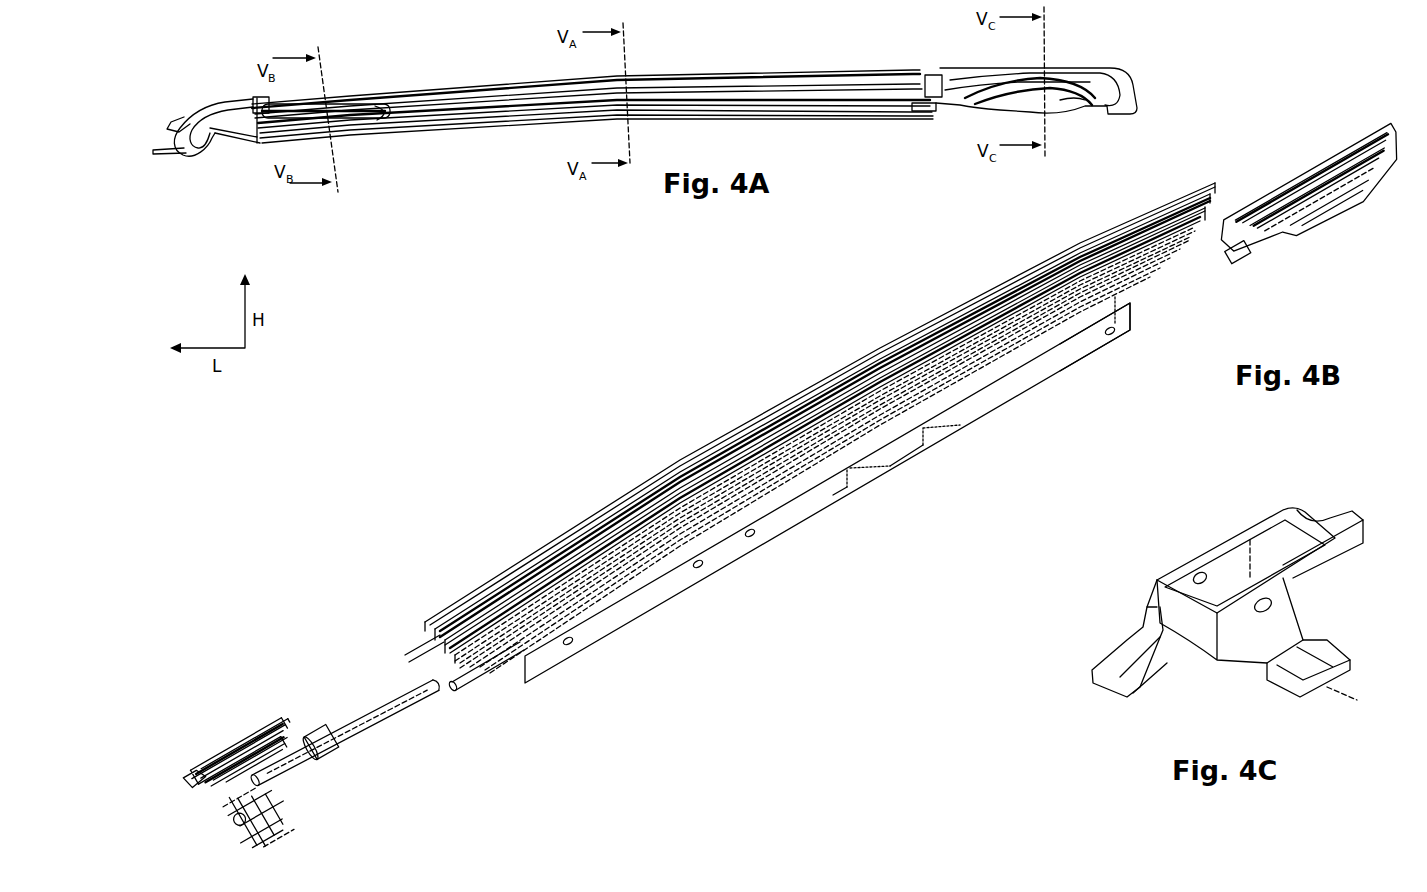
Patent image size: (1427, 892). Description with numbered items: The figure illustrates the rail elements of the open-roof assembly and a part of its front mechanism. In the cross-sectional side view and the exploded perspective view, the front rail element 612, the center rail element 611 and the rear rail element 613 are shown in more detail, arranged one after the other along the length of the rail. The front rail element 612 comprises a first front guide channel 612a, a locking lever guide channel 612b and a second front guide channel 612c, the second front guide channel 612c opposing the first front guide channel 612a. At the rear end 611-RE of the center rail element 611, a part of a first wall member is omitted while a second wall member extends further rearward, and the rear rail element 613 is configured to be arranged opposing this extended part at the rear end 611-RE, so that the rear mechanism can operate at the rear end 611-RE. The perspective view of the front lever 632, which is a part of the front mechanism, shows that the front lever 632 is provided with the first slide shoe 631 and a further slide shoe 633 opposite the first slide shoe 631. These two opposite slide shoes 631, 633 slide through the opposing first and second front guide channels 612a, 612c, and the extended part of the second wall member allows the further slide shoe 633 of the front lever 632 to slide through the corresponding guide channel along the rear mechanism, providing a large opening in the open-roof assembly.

In FIG. 4A, the center rail element 611 is at (537, 104).
In FIG. 4B, the center rail element 611 is at (737, 592).
In FIG. 4B, the rear end of the center rail element 611-RE is at (1174, 338).
In FIG. 4A, the front rail element 612 is at (290, 185).
In FIG. 4B, the front rail element 612 is at (312, 765).
In FIG. 4A, the first front guide channel 612a is at (210, 128).
In FIG. 4B, the first front guide channel 612a is at (270, 785).
In FIG. 4A, the locking lever guide channel 612b is at (352, 127).
In FIG. 4B, the locking lever guide channel 612b is at (395, 717).
In FIG. 4B, the second front guide channel 612c is at (233, 747).
In FIG. 4A, the rear rail element 613 is at (1073, 101).
In FIG. 4B, the rear rail element 613 is at (1327, 230).
In FIG. 4C, the first slide shoe 631 is at (1312, 663).
In FIG. 4C, the front lever 632 is at (1303, 535).
In FIG. 4C, the further slide shoe 633 is at (1108, 670).